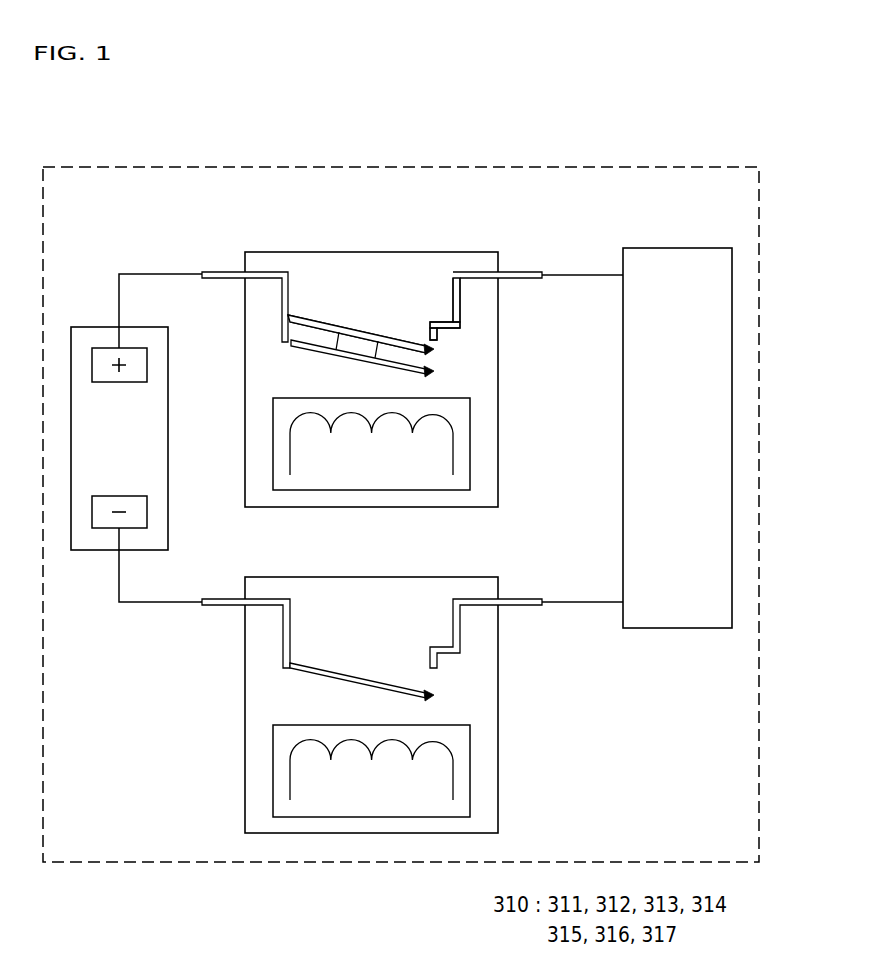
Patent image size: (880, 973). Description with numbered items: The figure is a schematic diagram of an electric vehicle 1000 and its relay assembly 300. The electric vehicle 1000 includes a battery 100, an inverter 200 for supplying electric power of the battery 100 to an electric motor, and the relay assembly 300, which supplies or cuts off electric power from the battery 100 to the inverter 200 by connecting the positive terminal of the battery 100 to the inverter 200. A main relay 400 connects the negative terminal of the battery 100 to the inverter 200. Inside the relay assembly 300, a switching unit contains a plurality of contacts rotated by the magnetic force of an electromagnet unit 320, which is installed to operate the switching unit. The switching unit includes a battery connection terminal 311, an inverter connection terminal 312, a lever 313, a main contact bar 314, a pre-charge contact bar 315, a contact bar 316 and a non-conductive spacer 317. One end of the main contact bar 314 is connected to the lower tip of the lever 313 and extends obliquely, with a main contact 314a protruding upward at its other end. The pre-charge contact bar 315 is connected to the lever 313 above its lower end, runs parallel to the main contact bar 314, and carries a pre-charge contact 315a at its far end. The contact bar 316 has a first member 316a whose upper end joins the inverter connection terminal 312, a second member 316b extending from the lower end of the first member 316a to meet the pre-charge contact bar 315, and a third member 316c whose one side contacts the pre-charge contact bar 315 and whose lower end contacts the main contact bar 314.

The electric vehicle 1000 is at (705, 162).
The battery 100 is at (91, 318).
The inverter 200 is at (687, 634).
The relay assembly 300 is at (476, 240).
The battery connection terminal 311 is at (262, 272).
The inverter connection terminal 312 is at (525, 272).
The lever 313 is at (314, 276).
The main contact bar 314 is at (374, 374).
The main contact 314a is at (433, 368).
The pre-charge contact bar 315 is at (361, 276).
The pre-charge contact 315a is at (428, 338).
The contact bar 316 is at (515, 330).
The first member 316a is at (457, 300).
The second member 316b is at (460, 327).
The third member 316c is at (438, 337).
The spacer 317 is at (356, 342).
The electromagnet unit 320 is at (422, 491).
The main relay 400 is at (506, 714).